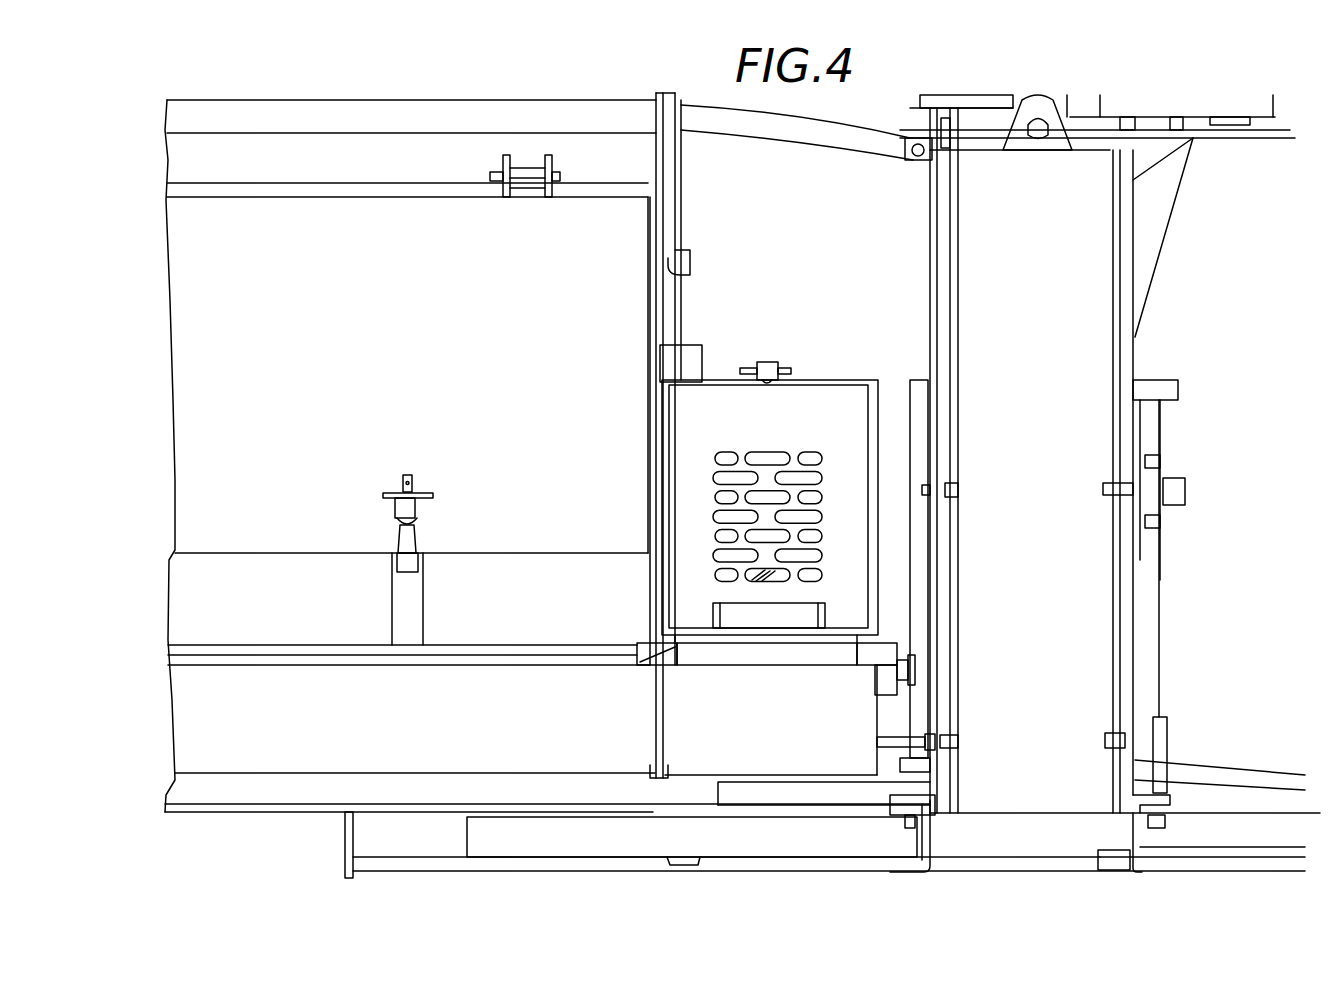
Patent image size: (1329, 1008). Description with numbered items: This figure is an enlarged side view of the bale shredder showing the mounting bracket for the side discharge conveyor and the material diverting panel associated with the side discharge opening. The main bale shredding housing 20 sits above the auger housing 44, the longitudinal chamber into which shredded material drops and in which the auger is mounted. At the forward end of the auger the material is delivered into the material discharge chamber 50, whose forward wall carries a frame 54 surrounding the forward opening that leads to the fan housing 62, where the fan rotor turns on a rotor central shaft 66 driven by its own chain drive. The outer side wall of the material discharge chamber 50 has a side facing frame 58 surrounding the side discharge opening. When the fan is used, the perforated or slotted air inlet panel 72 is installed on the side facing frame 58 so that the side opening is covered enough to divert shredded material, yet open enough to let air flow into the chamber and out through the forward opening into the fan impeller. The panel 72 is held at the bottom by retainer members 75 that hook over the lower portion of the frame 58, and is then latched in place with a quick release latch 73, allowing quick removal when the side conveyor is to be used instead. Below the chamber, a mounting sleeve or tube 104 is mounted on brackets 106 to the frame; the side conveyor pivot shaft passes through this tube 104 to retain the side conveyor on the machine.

The main bale shredding housing 20 is at (470, 524).
The auger housing 44 is at (267, 737).
The material discharge chamber 50 is at (840, 378).
The frame 54 is at (918, 408).
The side facing frame 58 is at (908, 405).
The fan housing 62 is at (1090, 640).
The rotor central shaft 66 is at (1175, 488).
The perforated air inlet panel 72 is at (688, 423).
The quick release latch 73 is at (768, 366).
The retainer members 75 is at (712, 617).
The mounting sleeve or tube 104 is at (747, 653).
The brackets 106 is at (637, 662).